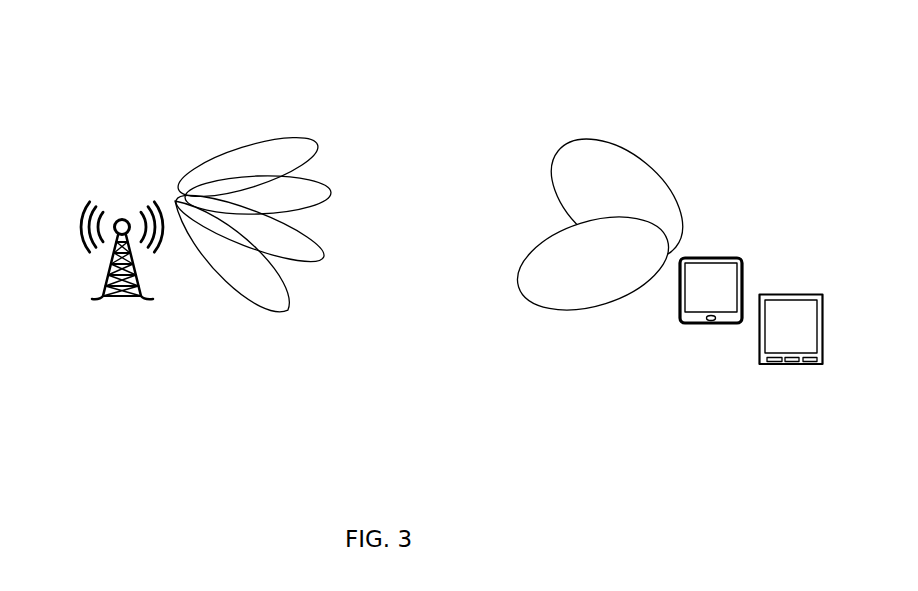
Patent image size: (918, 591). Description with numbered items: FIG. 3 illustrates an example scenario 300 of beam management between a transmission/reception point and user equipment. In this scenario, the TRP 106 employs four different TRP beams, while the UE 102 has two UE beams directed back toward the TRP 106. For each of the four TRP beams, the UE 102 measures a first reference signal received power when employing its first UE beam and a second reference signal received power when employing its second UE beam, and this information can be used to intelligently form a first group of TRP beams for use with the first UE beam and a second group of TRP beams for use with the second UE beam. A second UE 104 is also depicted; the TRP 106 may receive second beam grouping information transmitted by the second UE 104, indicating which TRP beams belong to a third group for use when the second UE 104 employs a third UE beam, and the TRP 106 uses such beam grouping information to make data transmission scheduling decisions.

The beam management system / environment 300 is at (239, 61).
The TRP 106 is at (80, 216).
The UE 102 is at (697, 257).
The second UE 104 is at (797, 293).